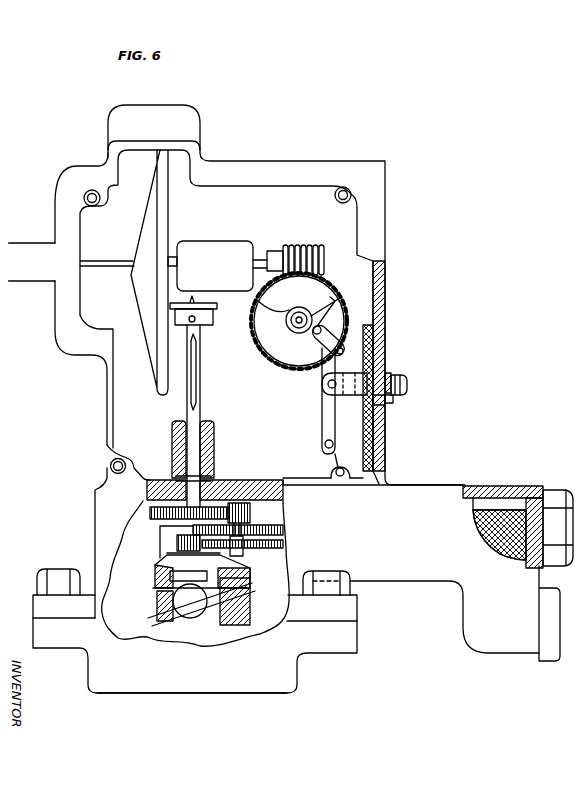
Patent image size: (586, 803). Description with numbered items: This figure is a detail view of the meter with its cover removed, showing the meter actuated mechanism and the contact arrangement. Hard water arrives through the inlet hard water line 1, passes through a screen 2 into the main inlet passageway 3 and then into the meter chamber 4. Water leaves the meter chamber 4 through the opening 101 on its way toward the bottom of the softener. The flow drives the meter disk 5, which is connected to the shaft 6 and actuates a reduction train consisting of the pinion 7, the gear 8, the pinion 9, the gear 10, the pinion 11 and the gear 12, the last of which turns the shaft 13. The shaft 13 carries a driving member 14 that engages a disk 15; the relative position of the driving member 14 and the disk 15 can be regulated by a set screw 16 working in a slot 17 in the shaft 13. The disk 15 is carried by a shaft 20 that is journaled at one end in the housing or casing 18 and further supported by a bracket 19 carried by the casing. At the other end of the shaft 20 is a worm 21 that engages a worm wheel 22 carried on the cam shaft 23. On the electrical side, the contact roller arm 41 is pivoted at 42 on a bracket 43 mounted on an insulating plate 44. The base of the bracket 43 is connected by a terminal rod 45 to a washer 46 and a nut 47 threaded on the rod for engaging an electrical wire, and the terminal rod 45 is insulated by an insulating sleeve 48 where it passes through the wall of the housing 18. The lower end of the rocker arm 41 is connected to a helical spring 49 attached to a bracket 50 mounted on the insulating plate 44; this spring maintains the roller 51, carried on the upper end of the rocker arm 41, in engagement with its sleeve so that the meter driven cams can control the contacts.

The inlet hard water line 1 is at (555, 630).
The screen 2 is at (503, 497).
The main inlet passageway 3 is at (399, 578).
The meter chamber 4 is at (297, 672).
The meter disk 5 is at (207, 580).
The shaft 6 is at (162, 571).
The pinion 7 is at (178, 543).
The gear 8 is at (285, 546).
The pinion 9 is at (246, 553).
The gear 10 is at (285, 530).
The pinion 11 is at (252, 512).
The gear 12 is at (150, 515).
The shaft 13 is at (200, 413).
The driving member 14 is at (205, 323).
The disk 15 is at (160, 383).
The set screw 16 is at (198, 325).
The slot 17 is at (200, 371).
The housing or casing 18 is at (65, 183).
The bracket 19 is at (214, 251).
The shaft 20 is at (97, 263).
The worm 21 is at (296, 253).
The worm wheel 22 is at (332, 293).
The cam shaft 23 is at (298, 313).
The contact roller arm 41 is at (322, 431).
The pivot 42 is at (327, 386).
The bracket 43 is at (347, 398).
The insulating plate 44 is at (387, 476).
The terminal rod 45 is at (388, 378).
The washer 46 is at (401, 393).
The nut 47 is at (409, 379).
The insulating sleeve 48 is at (392, 400).
The helical spring 49 is at (324, 449).
The bracket 50 is at (331, 467).
The roller 51 is at (346, 311).
The opening 101 is at (160, 617).